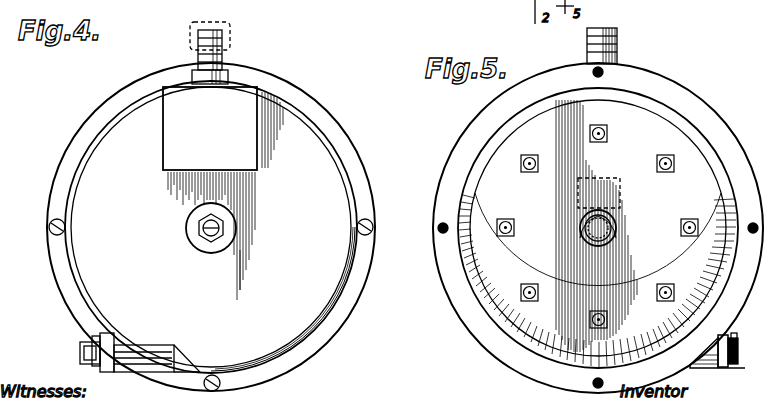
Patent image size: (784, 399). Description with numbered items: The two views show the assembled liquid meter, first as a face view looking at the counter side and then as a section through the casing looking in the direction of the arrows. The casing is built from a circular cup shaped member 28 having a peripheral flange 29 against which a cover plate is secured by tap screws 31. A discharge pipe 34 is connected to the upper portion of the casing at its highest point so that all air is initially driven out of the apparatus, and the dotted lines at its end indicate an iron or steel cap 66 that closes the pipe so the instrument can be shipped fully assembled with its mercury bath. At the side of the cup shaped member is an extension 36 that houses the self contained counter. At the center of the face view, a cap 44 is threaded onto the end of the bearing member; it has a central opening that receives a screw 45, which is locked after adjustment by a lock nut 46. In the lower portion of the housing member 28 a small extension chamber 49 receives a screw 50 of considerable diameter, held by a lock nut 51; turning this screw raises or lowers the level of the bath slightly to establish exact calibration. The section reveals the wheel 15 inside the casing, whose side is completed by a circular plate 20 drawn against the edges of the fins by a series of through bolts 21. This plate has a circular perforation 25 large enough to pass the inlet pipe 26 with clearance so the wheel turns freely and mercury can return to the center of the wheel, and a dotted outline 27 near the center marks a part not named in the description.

In FIG. 5, the wheel 15 is at (503, 270).
In FIG. 5, the circular plate 20 is at (597, 233).
In FIG. 5, the through bolts 21 is at (521, 162).
In FIG. 5, the circular perforation 25 is at (586, 238).
In FIG. 5, the inlet pipe 26 is at (616, 222).
In FIG. 5, the casing 27 is at (614, 182).
In FIG. 4, the cup shaped member 28 is at (213, 229).
In FIG. 5, the cup shaped member 28 is at (678, 124).
In FIG. 4, the peripheral flange 29 is at (328, 120).
In FIG. 5, the peripheral flange 29 is at (657, 82).
In FIG. 4, the tap screws 31 is at (50, 224).
In FIG. 5, the tap screws 31 is at (594, 69).
In FIG. 4, the discharge pipe 34 is at (232, 80).
In FIG. 5, the discharge pipe 34 is at (617, 50).
In FIG. 4, the extension 36 is at (223, 193).
In FIG. 4, the cap 44 is at (187, 235).
In FIG. 4, the screw 45 is at (211, 236).
In FIG. 4, the lock nut 46 is at (232, 228).
In FIG. 4, the extension chamber 49 is at (130, 352).
In FIG. 5, the extension chamber 49 is at (704, 365).
In FIG. 4, the screw 50 is at (80, 352).
In FIG. 5, the screw 50 is at (738, 350).
In FIG. 4, the lock nut 51 is at (95, 340).
In FIG. 5, the lock nut 51 is at (738, 368).
In FIG. 4, the cap 66 is at (232, 30).